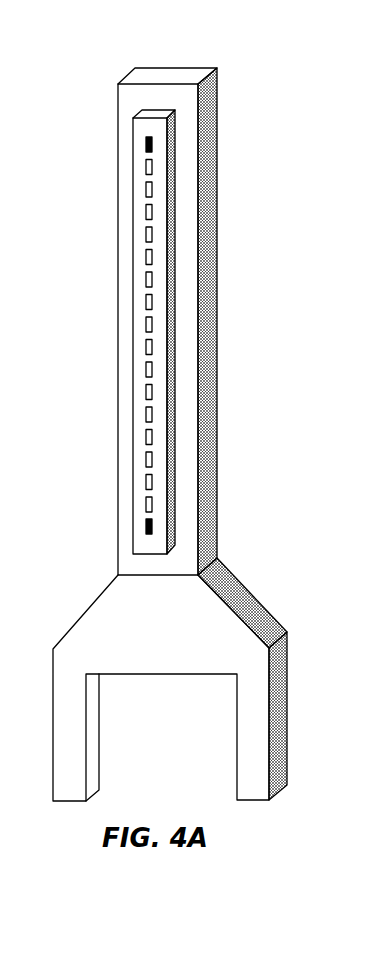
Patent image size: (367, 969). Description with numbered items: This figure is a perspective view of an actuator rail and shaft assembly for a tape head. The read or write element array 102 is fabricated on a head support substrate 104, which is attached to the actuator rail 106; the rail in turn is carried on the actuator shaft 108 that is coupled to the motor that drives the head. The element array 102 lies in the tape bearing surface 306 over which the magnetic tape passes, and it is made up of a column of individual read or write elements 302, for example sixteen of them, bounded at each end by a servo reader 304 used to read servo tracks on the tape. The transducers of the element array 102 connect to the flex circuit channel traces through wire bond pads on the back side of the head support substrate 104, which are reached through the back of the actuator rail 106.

The read or write element array 102 is at (148, 120).
The head support substrate 104 is at (173, 333).
The actuator rail 106 is at (216, 503).
The actuator shaft 108 is at (252, 594).
The read or write elements 302 is at (153, 167).
The servo readers 304 is at (146, 145).
The tape bearing surface 306 is at (140, 223).